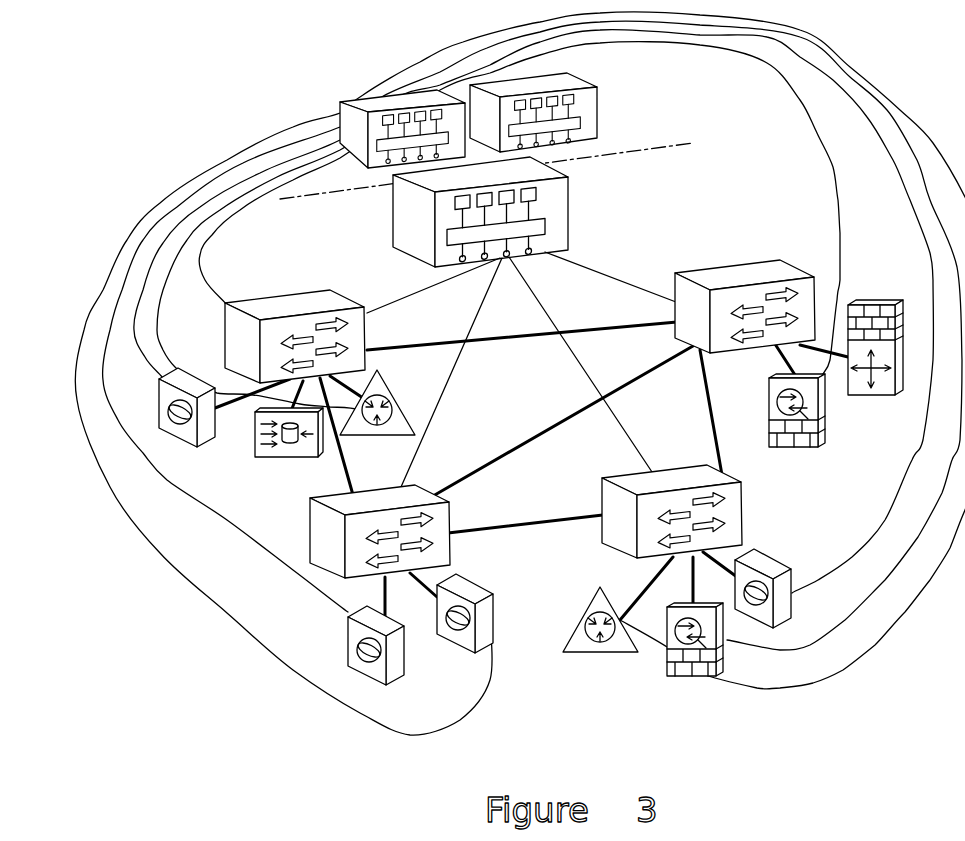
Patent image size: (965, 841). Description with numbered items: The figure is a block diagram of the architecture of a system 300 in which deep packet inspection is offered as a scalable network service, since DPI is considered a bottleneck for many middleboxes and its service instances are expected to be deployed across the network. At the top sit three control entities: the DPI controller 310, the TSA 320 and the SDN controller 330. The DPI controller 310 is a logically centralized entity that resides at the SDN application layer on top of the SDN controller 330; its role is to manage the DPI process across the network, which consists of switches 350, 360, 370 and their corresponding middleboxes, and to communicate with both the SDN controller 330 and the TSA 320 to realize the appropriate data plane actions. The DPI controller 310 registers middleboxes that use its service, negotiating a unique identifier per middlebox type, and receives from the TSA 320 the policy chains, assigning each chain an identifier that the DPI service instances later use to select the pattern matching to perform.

The system 300 is at (152, 88).
The DPI controller 310 is at (338, 117).
The TSA 320 is at (599, 86).
The SDN controller 330 is at (569, 216).
The switch S3 350 is at (748, 263).
The switches S2 360 is at (284, 294).
The switch S4 370 is at (631, 474).